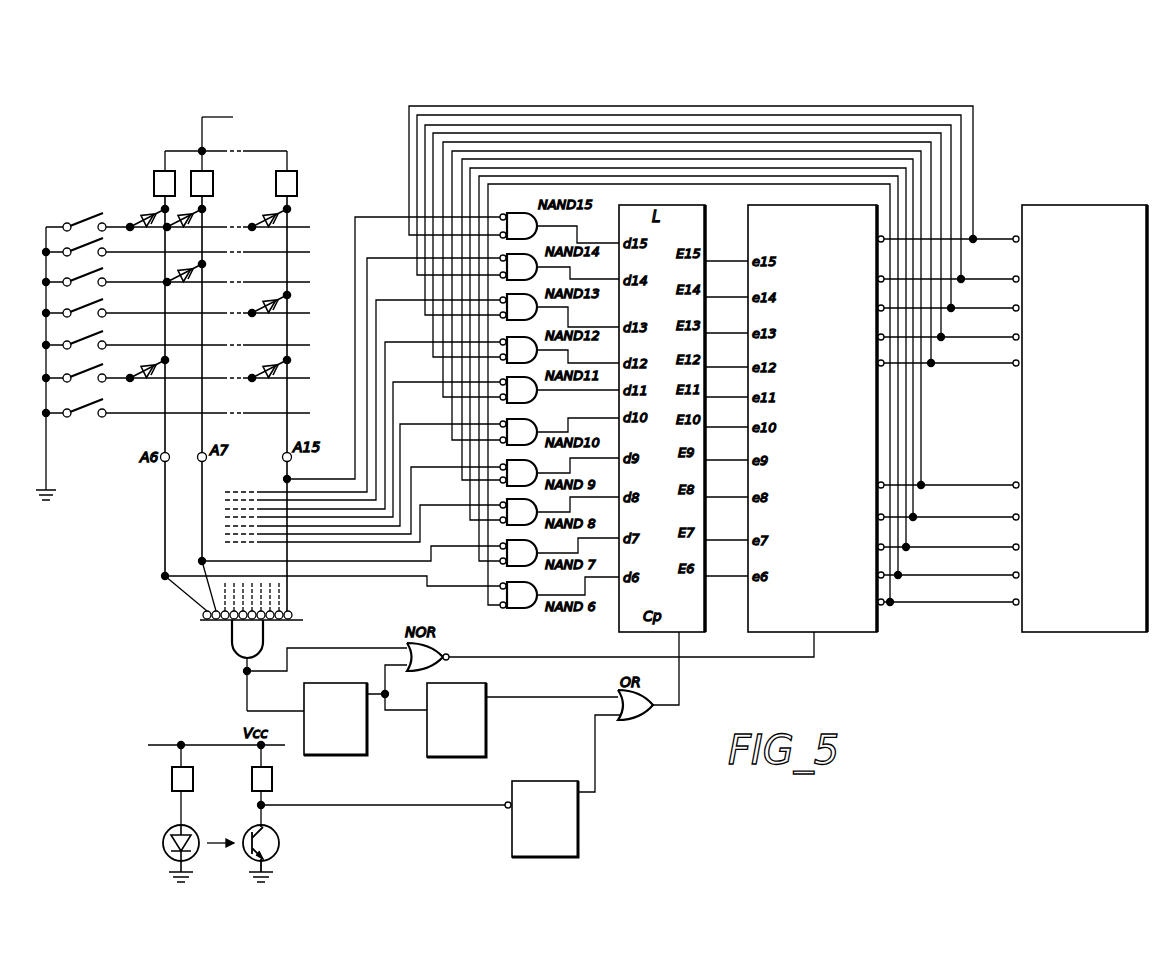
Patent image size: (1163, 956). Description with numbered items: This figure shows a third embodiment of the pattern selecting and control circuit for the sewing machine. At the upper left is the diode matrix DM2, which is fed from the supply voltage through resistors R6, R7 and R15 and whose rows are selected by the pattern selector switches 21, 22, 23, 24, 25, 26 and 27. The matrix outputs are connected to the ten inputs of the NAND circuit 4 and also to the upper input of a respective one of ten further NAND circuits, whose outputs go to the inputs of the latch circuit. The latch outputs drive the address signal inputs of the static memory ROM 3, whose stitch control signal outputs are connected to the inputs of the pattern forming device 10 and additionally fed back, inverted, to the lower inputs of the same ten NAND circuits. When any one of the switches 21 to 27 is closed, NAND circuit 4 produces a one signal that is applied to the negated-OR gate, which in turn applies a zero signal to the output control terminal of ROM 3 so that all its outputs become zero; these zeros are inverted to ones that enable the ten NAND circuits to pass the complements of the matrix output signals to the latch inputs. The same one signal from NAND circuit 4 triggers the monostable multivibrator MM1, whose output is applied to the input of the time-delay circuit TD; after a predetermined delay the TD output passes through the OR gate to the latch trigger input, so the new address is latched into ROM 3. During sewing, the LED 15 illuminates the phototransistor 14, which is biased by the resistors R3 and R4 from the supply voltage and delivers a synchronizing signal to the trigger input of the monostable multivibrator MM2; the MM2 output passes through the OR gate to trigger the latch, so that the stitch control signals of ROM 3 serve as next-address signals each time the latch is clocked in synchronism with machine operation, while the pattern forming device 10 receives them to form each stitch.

The pattern forming device 10 is at (1074, 435).
The phototransistor 14 is at (276, 838).
The LED 15 is at (165, 834).
The pattern selector switch 21 is at (178, 218).
The pattern selector switch 22 is at (177, 243).
The pattern selector switch 23 is at (177, 273).
The pattern selector switch 24 is at (177, 304).
The pattern selector switch 25 is at (177, 336).
The pattern selector switch 26 is at (177, 369).
The pattern selector switch 27 is at (177, 404).
The static memory ROM 3 is at (812, 418).
The NAND circuit 4 is at (228, 609).
The diode matrix DM2 is at (270, 149).
The biasing resistor R3 is at (193, 779).
The biasing resistor R4 is at (273, 779).
The resistor R6 is at (151, 182).
The resistor R7 is at (213, 183).
The resistor R15 is at (302, 183).
The monostable multivibrator MM1 is at (307, 719).
The monostable multivibrator MM2 is at (541, 819).
The time-delay circuit TD is at (456, 720).